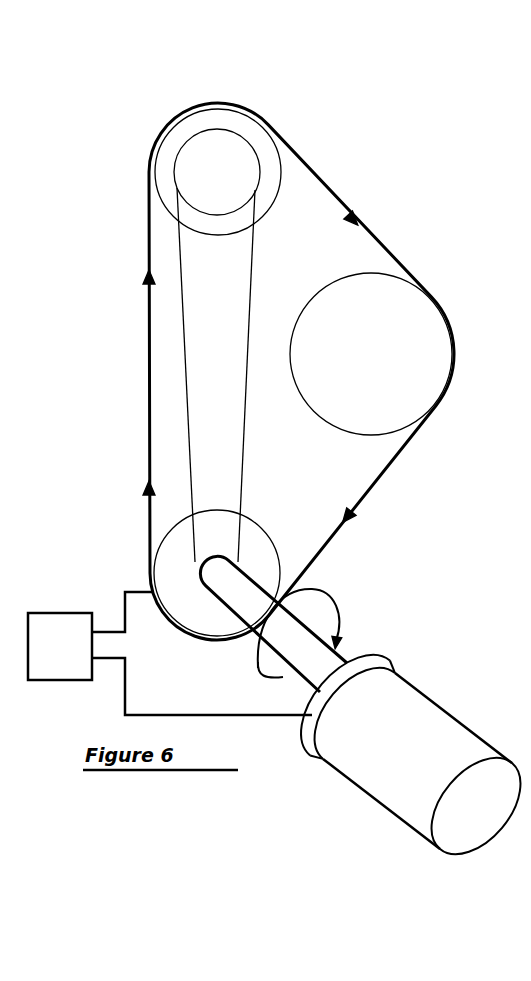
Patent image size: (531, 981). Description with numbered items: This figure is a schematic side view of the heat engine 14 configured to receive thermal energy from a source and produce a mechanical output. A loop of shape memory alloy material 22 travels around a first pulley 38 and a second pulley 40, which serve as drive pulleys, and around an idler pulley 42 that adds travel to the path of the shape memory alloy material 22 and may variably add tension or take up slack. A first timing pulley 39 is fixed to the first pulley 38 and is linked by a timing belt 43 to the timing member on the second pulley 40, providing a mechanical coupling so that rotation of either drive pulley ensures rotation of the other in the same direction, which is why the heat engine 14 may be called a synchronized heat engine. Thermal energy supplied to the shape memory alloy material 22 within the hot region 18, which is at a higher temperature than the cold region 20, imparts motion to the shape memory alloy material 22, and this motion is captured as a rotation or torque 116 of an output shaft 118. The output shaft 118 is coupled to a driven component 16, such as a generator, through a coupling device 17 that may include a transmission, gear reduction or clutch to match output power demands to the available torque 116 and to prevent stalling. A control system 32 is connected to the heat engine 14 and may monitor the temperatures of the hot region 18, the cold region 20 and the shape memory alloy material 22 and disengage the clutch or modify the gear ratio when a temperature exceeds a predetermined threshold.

The heat engine 14 is at (2, 121).
The driven component 16 is at (423, 769).
The coupling device 17 is at (386, 686).
The hot region 18 is at (69, 419).
The cold region 20 is at (482, 317).
The shape memory alloy material 22 is at (298, 371).
The control system 32 is at (73, 659).
The first pulley 38 is at (188, 148).
The first timing pulley 39 is at (245, 138).
The second pulley 40 is at (232, 555).
The idler pulley 42 is at (373, 322).
The timing belt 43 is at (244, 375).
The rotation/torque 116 is at (350, 615).
The output shaft 118 is at (252, 624).